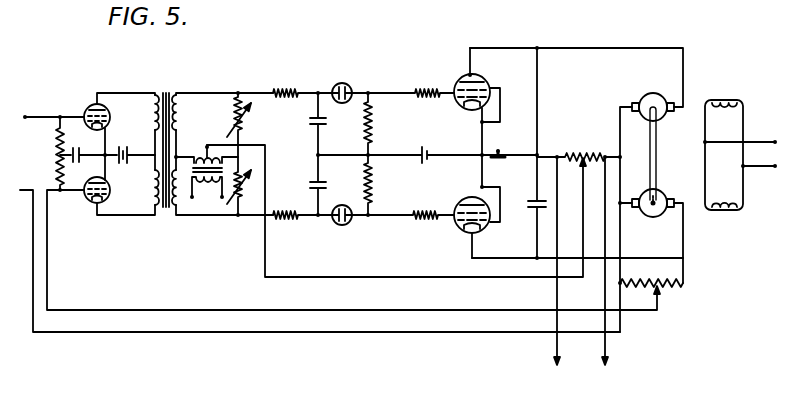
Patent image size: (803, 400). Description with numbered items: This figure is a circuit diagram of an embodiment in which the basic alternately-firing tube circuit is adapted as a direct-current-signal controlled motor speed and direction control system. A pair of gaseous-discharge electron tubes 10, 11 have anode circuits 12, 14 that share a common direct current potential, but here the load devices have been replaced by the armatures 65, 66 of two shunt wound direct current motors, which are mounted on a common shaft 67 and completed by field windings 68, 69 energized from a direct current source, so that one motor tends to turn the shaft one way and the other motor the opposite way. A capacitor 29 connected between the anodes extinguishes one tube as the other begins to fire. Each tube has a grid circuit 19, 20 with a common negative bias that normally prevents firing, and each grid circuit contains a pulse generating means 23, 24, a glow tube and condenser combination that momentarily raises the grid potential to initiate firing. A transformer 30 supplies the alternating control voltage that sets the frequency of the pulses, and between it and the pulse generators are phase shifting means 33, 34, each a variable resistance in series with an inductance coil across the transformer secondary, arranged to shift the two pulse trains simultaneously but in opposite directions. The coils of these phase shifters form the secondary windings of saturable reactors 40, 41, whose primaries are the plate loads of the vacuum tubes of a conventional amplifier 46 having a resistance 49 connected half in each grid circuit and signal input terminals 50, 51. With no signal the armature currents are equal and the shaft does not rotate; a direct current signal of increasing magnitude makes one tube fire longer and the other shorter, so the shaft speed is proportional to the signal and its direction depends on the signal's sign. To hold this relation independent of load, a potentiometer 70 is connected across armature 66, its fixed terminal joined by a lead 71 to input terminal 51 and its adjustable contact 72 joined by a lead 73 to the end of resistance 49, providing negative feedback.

The electron tube 10 is at (456, 78).
The electron tube 11 is at (455, 226).
The anode circuit 12 is at (558, 55).
The anode circuit 14 is at (566, 258).
The grid circuit 19 is at (392, 95).
The grid circuit 20 is at (376, 210).
The pulse generating means 23 is at (322, 85).
The pulse generating means 24 is at (330, 222).
The capacitor 29 is at (532, 208).
The transformer 30 is at (224, 170).
The phase shifting means 33 is at (208, 92).
The phase shifting means 34 is at (206, 218).
The saturable reactor 40 is at (168, 90).
The saturable reactor 41 is at (163, 218).
The amplifier 46 is at (122, 218).
The resistance 49 is at (56, 145).
The signal input terminal 50 is at (25, 117).
The signal input terminal 51 is at (20, 190).
The armature 65 is at (650, 93).
The armature 66 is at (657, 198).
The common shaft 67 is at (658, 145).
The field winding 68 is at (728, 100).
The field winding 69 is at (720, 212).
The potentiometer 70 is at (683, 272).
The lead 71 is at (497, 330).
The adjustable contact 72 is at (660, 303).
The lead 73 is at (493, 310).